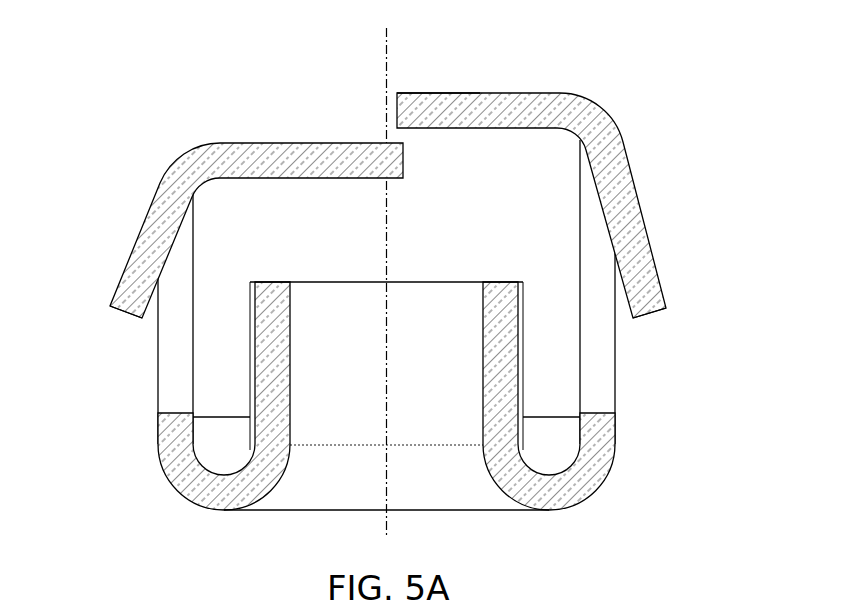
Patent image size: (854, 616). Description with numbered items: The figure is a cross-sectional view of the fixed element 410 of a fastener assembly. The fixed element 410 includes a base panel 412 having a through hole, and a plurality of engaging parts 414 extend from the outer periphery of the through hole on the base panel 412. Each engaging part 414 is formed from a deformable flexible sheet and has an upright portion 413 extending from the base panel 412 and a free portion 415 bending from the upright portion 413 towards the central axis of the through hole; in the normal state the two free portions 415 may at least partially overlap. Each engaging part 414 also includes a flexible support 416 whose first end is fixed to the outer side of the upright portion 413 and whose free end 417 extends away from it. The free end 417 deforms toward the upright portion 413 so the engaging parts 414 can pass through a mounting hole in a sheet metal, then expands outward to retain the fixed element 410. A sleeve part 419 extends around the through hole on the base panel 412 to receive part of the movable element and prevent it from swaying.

The fixed element 410 is at (391, 269).
The base panel 412 is at (188, 483).
The upright portion 413 is at (158, 347).
The engaging part 414 is at (391, 171).
The free portion 415 is at (443, 92).
The flexible support 416 is at (157, 193).
The free end 417 is at (115, 287).
The sleeve part 419 is at (360, 390).